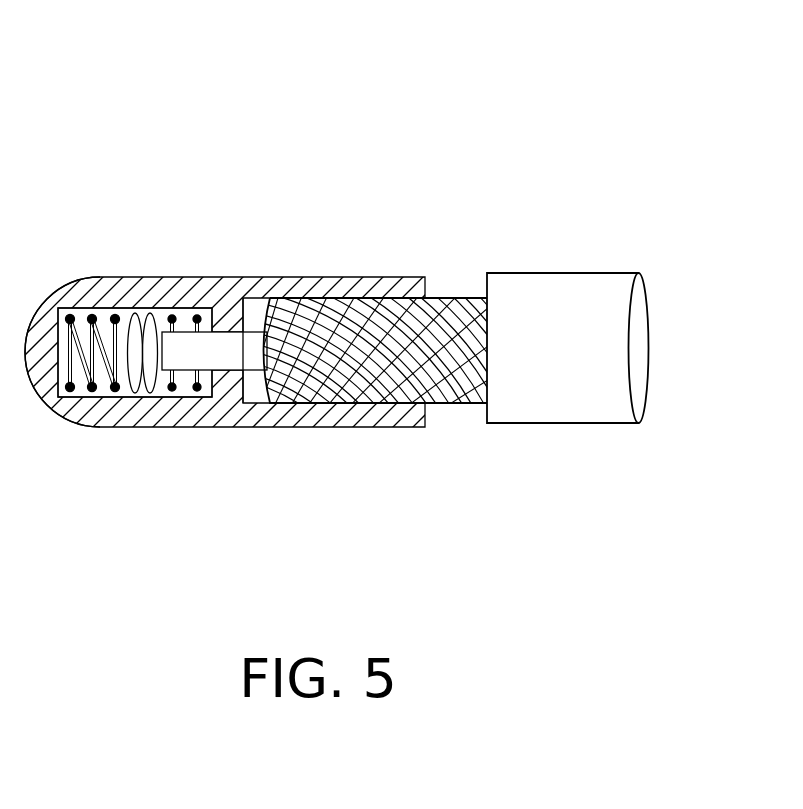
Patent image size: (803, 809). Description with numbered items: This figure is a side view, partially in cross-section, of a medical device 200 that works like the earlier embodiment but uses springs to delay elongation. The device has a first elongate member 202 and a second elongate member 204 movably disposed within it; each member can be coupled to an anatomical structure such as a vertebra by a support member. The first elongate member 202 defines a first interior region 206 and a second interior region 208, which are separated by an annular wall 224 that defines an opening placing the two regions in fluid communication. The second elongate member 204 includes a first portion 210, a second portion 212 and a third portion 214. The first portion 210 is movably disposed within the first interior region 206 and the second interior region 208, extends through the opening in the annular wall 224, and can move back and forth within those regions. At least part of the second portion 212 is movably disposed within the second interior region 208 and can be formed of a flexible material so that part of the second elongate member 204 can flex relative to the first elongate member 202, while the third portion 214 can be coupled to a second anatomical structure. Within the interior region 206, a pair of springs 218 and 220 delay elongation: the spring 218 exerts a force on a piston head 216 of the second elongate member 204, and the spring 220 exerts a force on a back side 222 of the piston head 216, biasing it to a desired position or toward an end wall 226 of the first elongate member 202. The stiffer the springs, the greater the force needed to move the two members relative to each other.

The medical device 200 is at (402, 114).
The first elongate member 202 is at (257, 278).
The second elongate member 204 is at (520, 274).
The first interior region 206 is at (100, 312).
The second interior region 208 is at (258, 390).
The first portion 210 is at (223, 350).
The second portion 212 is at (453, 297).
The third portion 214 is at (562, 424).
The piston head 216 is at (138, 312).
The spring 218 is at (82, 398).
The spring 220 is at (190, 393).
The back side 222 is at (172, 312).
The annular wall 224 is at (248, 314).
The end wall 226 is at (70, 311).